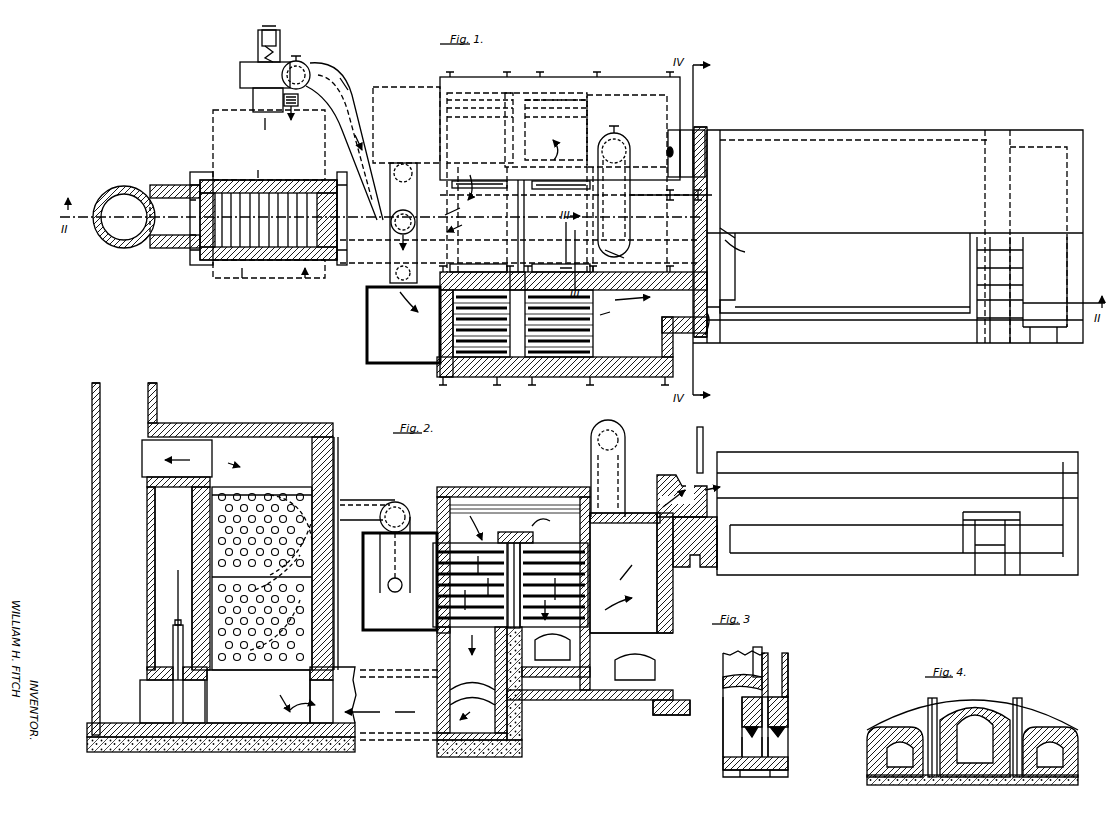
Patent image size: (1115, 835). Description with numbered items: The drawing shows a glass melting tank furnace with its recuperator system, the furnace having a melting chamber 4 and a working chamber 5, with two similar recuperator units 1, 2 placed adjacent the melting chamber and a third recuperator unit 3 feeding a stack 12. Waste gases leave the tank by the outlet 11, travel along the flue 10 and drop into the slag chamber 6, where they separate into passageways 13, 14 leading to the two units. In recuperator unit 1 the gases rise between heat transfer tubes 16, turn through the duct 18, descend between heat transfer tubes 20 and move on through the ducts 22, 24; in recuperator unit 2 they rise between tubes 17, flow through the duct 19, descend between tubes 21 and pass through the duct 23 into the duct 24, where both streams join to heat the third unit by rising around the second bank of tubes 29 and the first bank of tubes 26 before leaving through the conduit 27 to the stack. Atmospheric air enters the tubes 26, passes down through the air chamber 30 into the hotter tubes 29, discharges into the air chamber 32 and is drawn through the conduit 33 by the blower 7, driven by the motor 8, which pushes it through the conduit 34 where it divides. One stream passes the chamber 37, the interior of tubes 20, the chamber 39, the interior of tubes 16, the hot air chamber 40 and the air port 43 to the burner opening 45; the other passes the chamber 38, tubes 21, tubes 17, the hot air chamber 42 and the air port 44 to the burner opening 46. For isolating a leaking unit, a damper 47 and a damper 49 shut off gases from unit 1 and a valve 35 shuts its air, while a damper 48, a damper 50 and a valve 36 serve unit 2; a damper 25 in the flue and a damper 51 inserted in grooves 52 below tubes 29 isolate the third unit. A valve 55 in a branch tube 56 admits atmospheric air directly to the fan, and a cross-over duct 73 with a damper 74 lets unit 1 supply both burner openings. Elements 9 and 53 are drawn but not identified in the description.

In FIG. 1, the recuperator unit 1 is at (478, 357).
In FIG. 1, the recuperator unit 2 is at (487, 93).
In FIG. 1, the third recuperator unit 3 is at (300, 262).
In FIG. 1, the melting chamber 4 is at (887, 150).
In FIG. 2, the melting chamber 4 is at (858, 500).
In FIG. 1, the working chamber 5 is at (1058, 262).
In FIG. 2, the working chamber 5 is at (1055, 527).
In FIG. 1, the slag chamber 6 is at (530, 215).
In FIG. 2, the slag chamber 6 is at (720, 742).
In FIG. 3, the slag chamber 6 is at (723, 748).
In FIG. 1, the blower 7 is at (245, 68).
In FIG. 1, the motor 8 is at (262, 36).
In FIG. 2, the wall block 9 is at (683, 560).
In FIG. 1, the flue 10 is at (705, 218).
In FIG. 4, the flue 10 is at (980, 720).
In FIG. 1, the outlet 11 is at (713, 222).
In FIG. 1, the stack 12 is at (122, 200).
In FIG. 2, the stack 12 is at (128, 390).
In FIG. 1, the passageway 13 is at (525, 250).
In FIG. 3, the passageway 13 is at (780, 748).
In FIG. 1, the passageway 14 is at (547, 178).
In FIG. 1, the heat transfer tubes 16 is at (590, 326).
In FIG. 2, the heat transfer tubes 16 is at (553, 552).
In FIG. 1, the heat transfer tubes 17 is at (556, 95).
In FIG. 2, the duct 18 is at (522, 517).
In FIG. 1, the duct 19 is at (523, 93).
In FIG. 1, the heat transfer tubes 20 is at (453, 315).
In FIG. 2, the heat transfer tubes 20 is at (482, 545).
In FIG. 1, the heat transfer tubes 21 is at (460, 93).
In FIG. 1, the duct 22 is at (493, 264).
In FIG. 1, the duct 23 is at (466, 180).
In FIG. 2, the duct 24 is at (342, 672).
In FIG. 2, the damper 25 is at (172, 699).
In FIG. 2, the first bank of tubes 26 is at (272, 490).
In FIG. 2, the conduit 27 is at (185, 445).
In FIG. 2, the second bank of tubes 29 is at (258, 668).
In FIG. 1, the air chamber 30 is at (262, 262).
In FIG. 1, the air chamber 32 is at (218, 130).
In FIG. 1, the conduit 33 is at (253, 98).
In FIG. 1, the conduit 34 is at (325, 72).
In FIG. 2, the conduit 34 is at (360, 500).
In FIG. 1, the valve 35 is at (395, 273).
In FIG. 1, the valve 36 is at (404, 165).
In FIG. 1, the chamber 37 is at (375, 334).
In FIG. 2, the chamber 37 is at (368, 612).
In FIG. 1, the chamber 38 is at (398, 92).
In FIG. 1, the chamber 39 is at (520, 242).
In FIG. 2, the chamber 39 is at (512, 543).
In FIG. 1, the hot air chamber 40 is at (630, 357).
In FIG. 2, the hot air chamber 40 is at (645, 609).
In FIG. 1, the hot air chamber 42 is at (643, 96).
In FIG. 1, the air port 43 is at (710, 315).
In FIG. 2, the air port 43 is at (707, 470).
In FIG. 4, the air port 43 is at (1050, 740).
In FIG. 1, the air port 44 is at (700, 128).
In FIG. 4, the air port 44 is at (897, 745).
In FIG. 2, the burner opening 45 is at (660, 492).
In FIG. 1, the burner opening 46 is at (668, 152).
In FIG. 1, the damper 47 is at (560, 262).
In FIG. 3, the damper 47 is at (770, 692).
In FIG. 1, the damper 48 is at (566, 181).
In FIG. 1, the damper 49 is at (478, 264).
In FIG. 1, the damper 50 is at (488, 181).
In FIG. 2, the damper 51 is at (275, 670).
In FIG. 2, the grooves 52 is at (214, 675).
In FIG. 2, the wall 53 is at (305, 595).
In FIG. 1, the valve 55 is at (298, 120).
In FIG. 1, the branch tube 56 is at (298, 100).
In FIG. 1, the cross-over duct 73 is at (617, 225).
In FIG. 1, the damper 74 is at (616, 140).